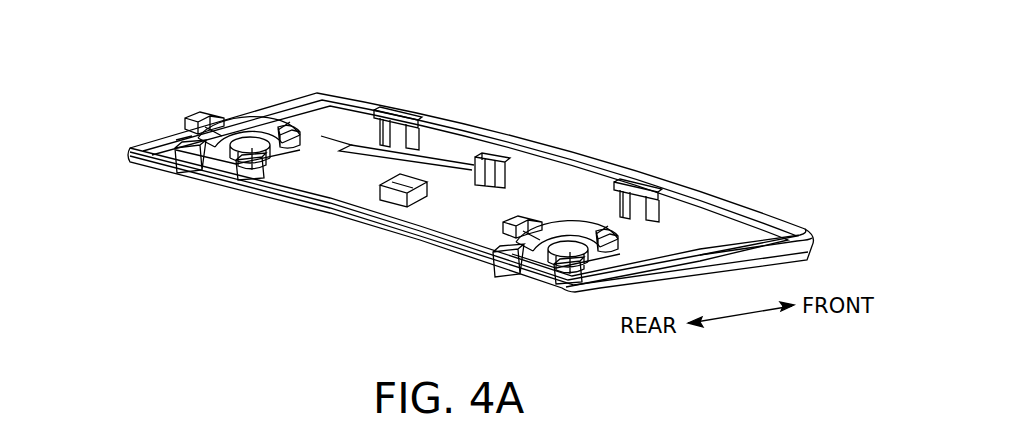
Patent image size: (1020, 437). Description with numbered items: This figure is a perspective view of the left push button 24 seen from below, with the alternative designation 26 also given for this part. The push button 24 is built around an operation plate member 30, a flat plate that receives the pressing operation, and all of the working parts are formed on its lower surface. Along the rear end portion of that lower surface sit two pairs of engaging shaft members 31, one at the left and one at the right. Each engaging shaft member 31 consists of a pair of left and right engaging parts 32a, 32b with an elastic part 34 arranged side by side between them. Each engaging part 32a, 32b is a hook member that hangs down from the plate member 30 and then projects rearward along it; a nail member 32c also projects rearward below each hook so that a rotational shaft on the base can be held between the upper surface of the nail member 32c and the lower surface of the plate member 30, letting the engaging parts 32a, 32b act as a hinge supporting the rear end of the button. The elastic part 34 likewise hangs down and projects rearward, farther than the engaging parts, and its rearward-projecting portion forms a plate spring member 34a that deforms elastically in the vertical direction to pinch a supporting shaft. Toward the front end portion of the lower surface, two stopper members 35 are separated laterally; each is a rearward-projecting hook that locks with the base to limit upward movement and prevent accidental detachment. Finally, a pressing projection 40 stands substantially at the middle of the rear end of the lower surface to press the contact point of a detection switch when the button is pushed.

The left push button 24 is at (428, 164).
The plate body 26 is at (68, 58).
The operation plate member 30 is at (345, 186).
The engaging shaft member 31 is at (385, 182).
The engaging part 32a is at (187, 118).
The engaging part 32b is at (276, 128).
The nail member 32c is at (181, 168).
The elastic part 34 is at (230, 122).
The plate spring member 34a is at (206, 170).
The stopper member 35 is at (413, 118).
The pressing projection 40 is at (478, 186).